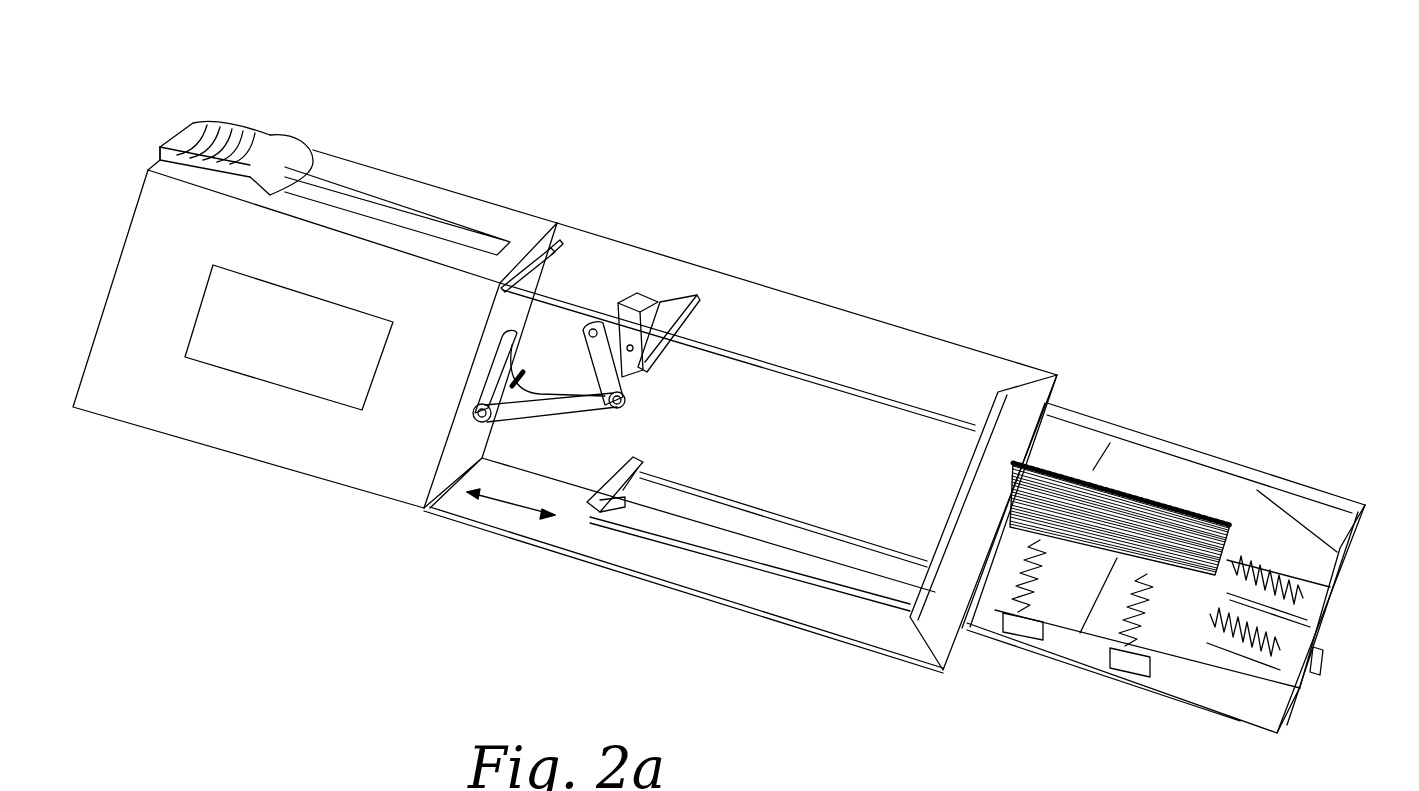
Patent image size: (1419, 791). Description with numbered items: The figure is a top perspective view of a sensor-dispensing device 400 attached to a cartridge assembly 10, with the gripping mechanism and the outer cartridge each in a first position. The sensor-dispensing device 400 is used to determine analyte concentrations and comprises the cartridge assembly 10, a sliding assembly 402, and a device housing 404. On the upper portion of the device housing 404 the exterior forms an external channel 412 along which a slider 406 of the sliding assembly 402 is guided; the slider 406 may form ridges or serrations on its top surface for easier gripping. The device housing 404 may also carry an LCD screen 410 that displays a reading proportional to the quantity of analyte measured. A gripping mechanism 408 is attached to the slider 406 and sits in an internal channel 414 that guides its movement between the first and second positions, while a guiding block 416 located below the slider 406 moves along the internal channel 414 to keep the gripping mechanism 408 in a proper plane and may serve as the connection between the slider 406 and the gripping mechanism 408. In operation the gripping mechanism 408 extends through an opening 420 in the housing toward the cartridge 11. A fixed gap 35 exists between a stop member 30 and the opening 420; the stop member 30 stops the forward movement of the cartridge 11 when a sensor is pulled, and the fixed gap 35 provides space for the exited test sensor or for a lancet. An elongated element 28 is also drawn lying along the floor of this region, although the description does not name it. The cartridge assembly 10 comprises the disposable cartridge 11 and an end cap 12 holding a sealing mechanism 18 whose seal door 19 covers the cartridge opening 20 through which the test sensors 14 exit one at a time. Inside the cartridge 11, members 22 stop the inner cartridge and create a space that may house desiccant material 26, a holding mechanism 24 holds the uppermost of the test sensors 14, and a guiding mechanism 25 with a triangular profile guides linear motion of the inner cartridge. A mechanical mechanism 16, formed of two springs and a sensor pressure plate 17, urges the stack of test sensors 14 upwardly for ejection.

The sensor-dispensing device 400 is at (860, 135).
The sliding assembly 402 is at (203, 123).
The slider 406 is at (290, 150).
The guiding block 416 is at (177, 157).
The external channel 412 is at (465, 237).
The opening 420 is at (537, 258).
The gripping mechanism 408 is at (543, 253).
The internal channel 414 is at (550, 263).
The seal door 19 is at (633, 303).
The sealing mechanism 18 is at (700, 318).
The cartridge assembly 10 is at (1045, 315).
The opening 20 is at (987, 430).
The test sensors 14 is at (1107, 513).
The holding mechanism 24 is at (1180, 503).
The cartridge 11 is at (1262, 547).
The guiding mechanism 25 is at (1303, 623).
The device housing 404 is at (183, 430).
The LCD screen 410 is at (305, 372).
The fixed gap 35 is at (500, 502).
The end cap 12 is at (508, 543).
The stop member 30 is at (585, 510).
The guide rail 28 is at (757, 597).
The desiccant material 26 is at (927, 603).
The members 22 is at (970, 600).
The mechanical mechanism 16 is at (1020, 627).
The sensor pressure plate 17 is at (1117, 553).